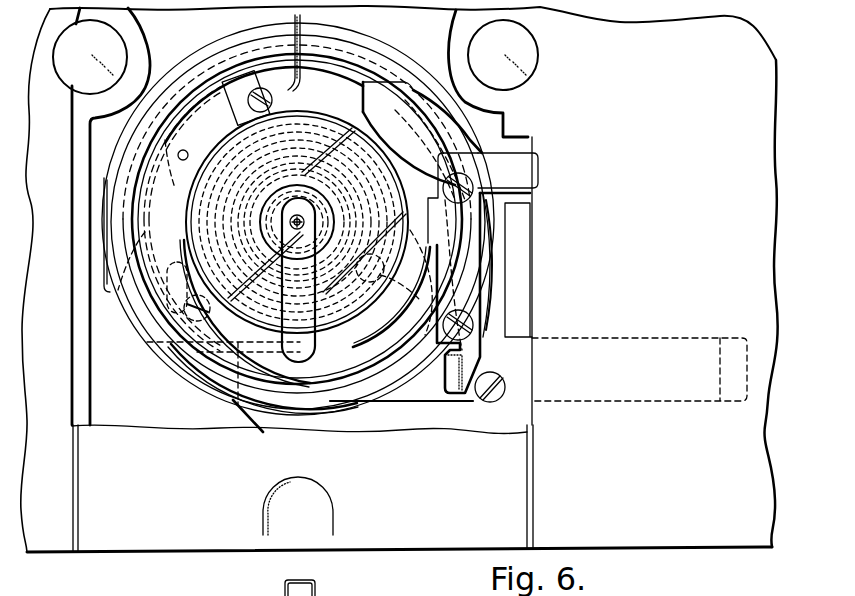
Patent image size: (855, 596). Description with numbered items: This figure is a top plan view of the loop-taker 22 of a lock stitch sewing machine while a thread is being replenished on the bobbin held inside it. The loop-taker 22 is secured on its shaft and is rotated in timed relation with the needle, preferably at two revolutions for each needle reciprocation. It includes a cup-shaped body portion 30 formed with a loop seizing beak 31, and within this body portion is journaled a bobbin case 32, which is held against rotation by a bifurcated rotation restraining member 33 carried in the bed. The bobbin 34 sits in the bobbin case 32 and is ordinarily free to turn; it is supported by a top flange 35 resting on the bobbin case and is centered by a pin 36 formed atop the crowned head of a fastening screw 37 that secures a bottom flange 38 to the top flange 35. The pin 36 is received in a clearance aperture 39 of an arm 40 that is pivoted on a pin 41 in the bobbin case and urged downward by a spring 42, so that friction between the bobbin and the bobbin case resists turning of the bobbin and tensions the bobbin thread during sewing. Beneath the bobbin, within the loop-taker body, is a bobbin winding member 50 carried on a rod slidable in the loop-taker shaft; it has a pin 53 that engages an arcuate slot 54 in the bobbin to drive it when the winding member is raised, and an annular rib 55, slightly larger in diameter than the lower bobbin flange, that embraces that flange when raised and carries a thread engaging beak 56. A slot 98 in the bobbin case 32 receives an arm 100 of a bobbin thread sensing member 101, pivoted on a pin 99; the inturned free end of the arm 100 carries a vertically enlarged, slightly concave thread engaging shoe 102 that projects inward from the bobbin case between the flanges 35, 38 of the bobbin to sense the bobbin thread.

The loop-taker 22 is at (165, 368).
The cup-shaped body portion 30 is at (385, 58).
The loop seizing beak 31 is at (444, 122).
The bobbin case 32 is at (145, 232).
The bifurcated rotation restraining member 33 is at (377, 97).
The bobbin 34 is at (348, 155).
The top flange 35 is at (225, 255).
The pin 36 is at (290, 224).
The fastening screw 37 is at (260, 214).
The bottom flange 38 is at (186, 226).
The clearance aperture 39 is at (312, 224).
The arm 40 is at (287, 283).
The pin 41 is at (230, 400).
The spring 42 is at (147, 342).
The bobbin winding member 50 is at (157, 300).
The pin 53 is at (428, 228).
The arcuate slot 54 is at (333, 162).
The annular rib 55 is at (466, 285).
The thread engaging beak 56 is at (374, 278).
The slot 98 is at (160, 154).
The pin 99 is at (178, 152).
The arm 100 is at (212, 105).
The bobbin thread sensing member 101 is at (322, 82).
The thread engaging shoe 102 is at (326, 153).